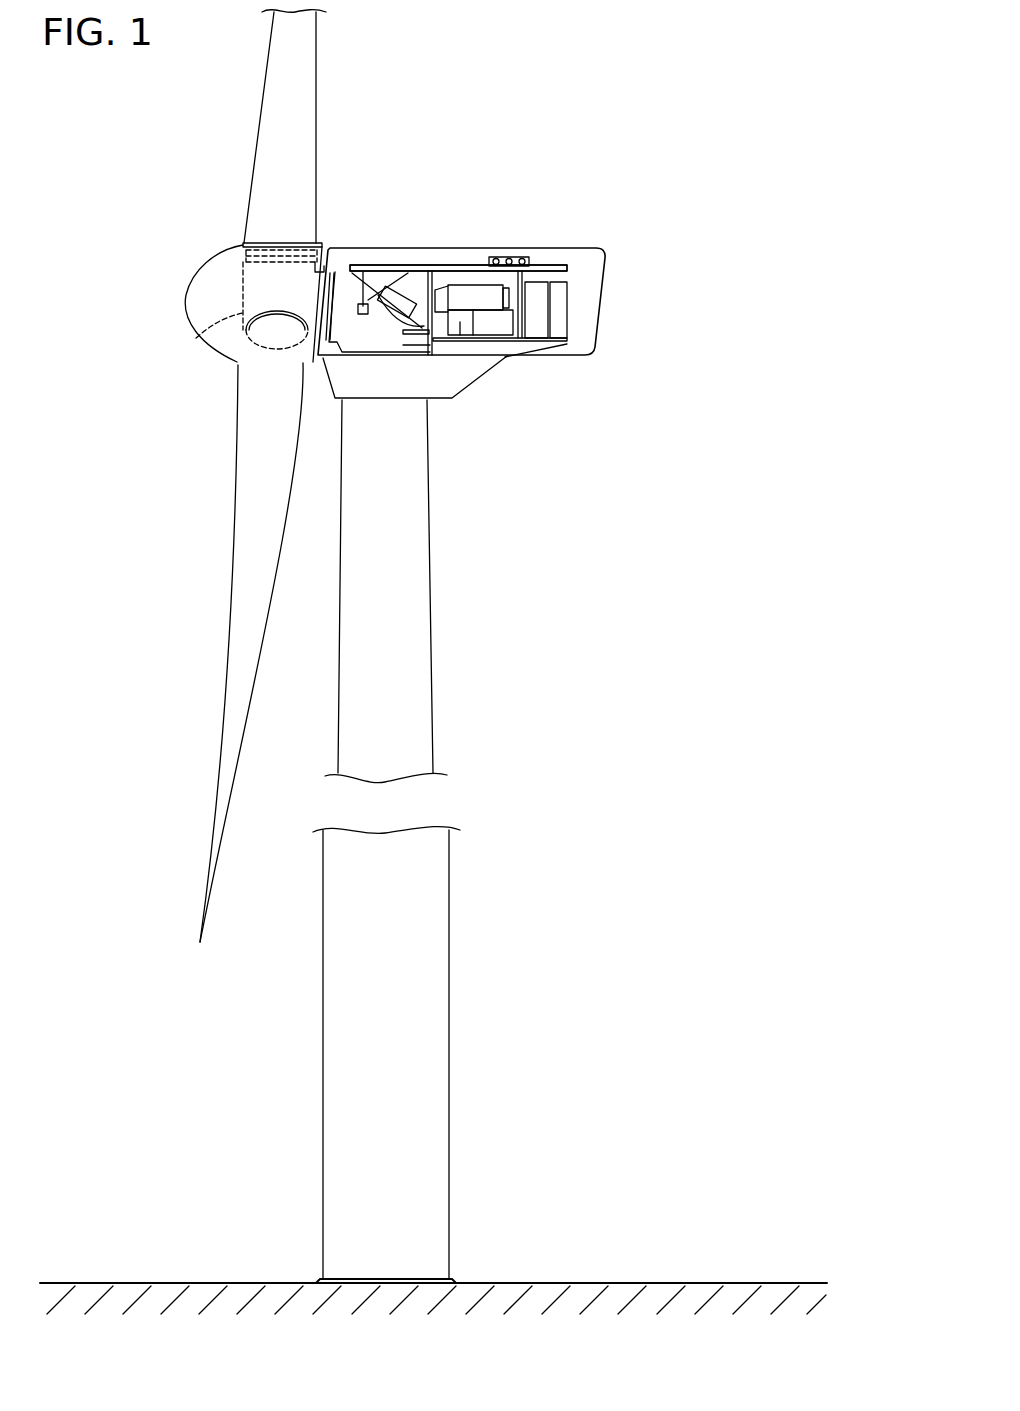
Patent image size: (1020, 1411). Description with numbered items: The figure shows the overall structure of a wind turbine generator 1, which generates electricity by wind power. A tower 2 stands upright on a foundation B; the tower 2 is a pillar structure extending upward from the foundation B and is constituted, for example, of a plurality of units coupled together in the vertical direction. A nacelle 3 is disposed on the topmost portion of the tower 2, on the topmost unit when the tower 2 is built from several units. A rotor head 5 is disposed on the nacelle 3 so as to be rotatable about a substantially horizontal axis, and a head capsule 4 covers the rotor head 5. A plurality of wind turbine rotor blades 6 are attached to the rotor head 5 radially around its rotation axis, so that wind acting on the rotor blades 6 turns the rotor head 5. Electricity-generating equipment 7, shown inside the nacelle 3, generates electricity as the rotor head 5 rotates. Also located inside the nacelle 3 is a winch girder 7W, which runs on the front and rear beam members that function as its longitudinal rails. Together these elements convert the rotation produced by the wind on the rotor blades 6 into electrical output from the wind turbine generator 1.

The wind turbine generator 1 is at (618, 103).
The tower 2 is at (447, 972).
The nacelle 3 is at (621, 295).
The head capsule 4 is at (205, 277).
The rotor head 5 is at (196, 338).
The wind turbine rotor blades 6 is at (273, 88).
The electricity-generating equipment 7 is at (477, 260).
The winch girder 7W is at (511, 254).
The foundation B is at (318, 1281).